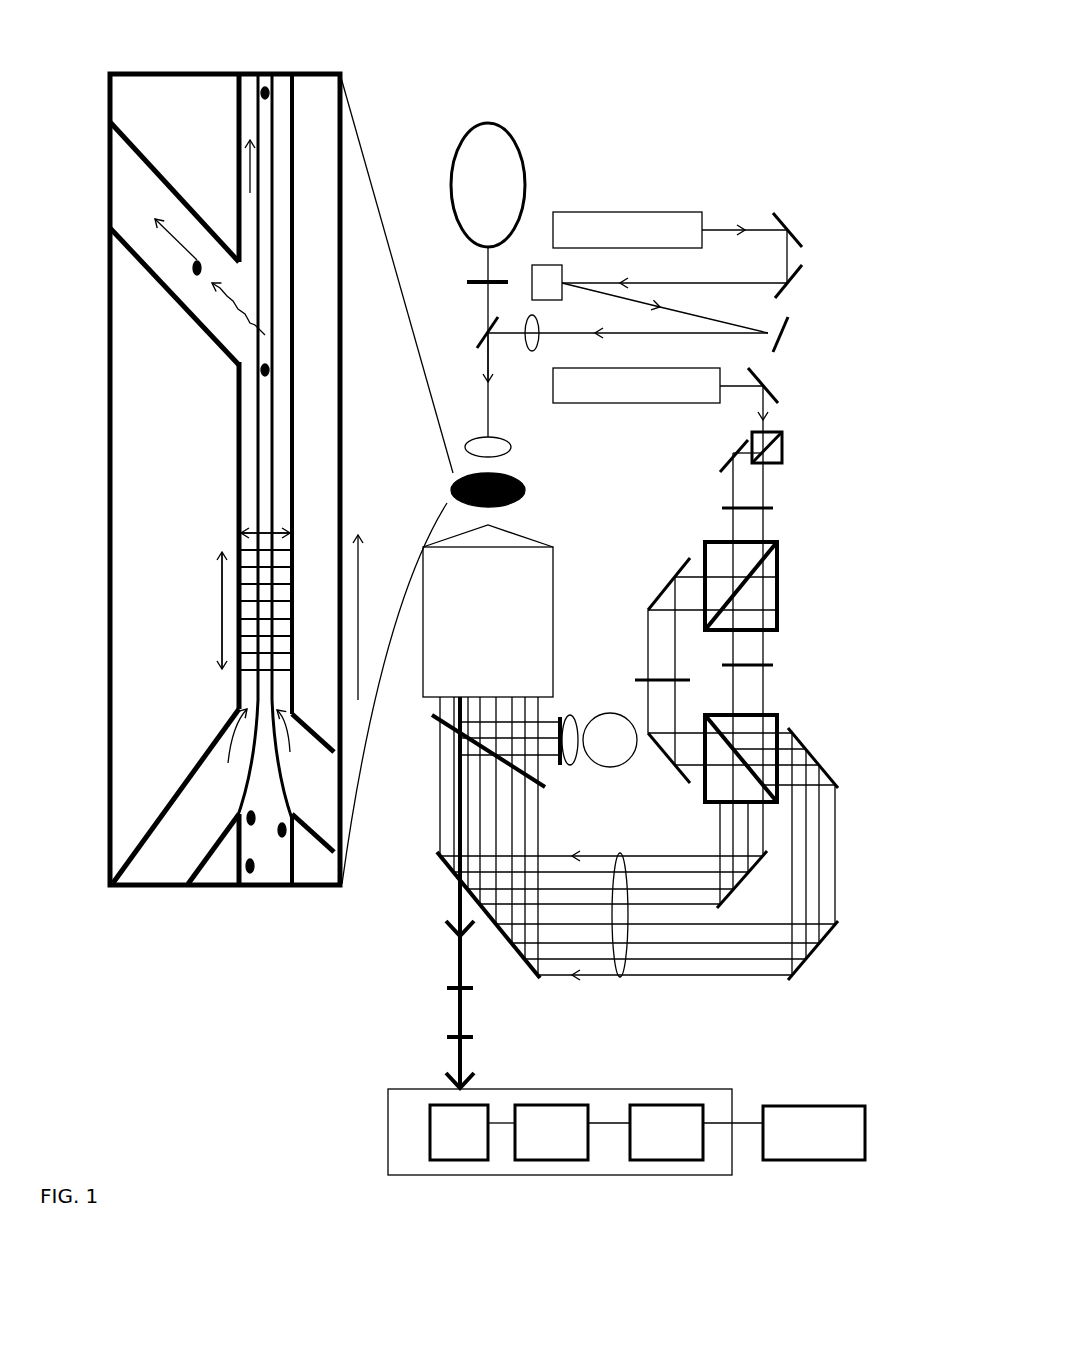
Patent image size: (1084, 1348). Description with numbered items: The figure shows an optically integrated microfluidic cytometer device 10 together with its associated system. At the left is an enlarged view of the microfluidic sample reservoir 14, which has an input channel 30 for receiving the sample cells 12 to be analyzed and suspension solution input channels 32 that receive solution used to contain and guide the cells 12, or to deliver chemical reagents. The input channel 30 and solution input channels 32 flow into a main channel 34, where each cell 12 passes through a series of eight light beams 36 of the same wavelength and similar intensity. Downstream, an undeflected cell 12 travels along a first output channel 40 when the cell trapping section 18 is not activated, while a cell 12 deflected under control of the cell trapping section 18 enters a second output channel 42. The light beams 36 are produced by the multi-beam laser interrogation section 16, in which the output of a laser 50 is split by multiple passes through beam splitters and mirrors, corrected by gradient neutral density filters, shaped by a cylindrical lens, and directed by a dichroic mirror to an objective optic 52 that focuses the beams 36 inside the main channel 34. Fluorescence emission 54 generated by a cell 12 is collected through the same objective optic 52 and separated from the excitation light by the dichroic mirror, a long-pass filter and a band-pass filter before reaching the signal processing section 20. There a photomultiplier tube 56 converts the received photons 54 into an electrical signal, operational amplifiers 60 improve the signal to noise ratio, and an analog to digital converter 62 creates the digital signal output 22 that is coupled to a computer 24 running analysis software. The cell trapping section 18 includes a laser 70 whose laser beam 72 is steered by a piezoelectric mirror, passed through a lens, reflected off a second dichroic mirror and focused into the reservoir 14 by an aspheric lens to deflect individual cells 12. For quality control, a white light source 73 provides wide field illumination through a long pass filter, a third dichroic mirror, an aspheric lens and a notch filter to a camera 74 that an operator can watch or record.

The optically integrated microfluidic cytometer device 10 is at (211, 1139).
The sample cell 12 is at (197, 262).
The microfluidic sample reservoir 14 is at (532, 490).
The multi-beam laser interrogation section 16 is at (845, 855).
The cell trapping section 18 is at (613, 180).
The signal processing section 20 is at (388, 1133).
The signal output 22 is at (742, 1123).
The computer 24 is at (835, 1160).
The input channel 30 is at (265, 900).
The suspension solution input channel 32 is at (317, 793).
The main channel 34 is at (232, 512).
The light beams 36 is at (283, 578).
The first output channel 40 is at (285, 88).
The second output channel 42 is at (130, 212).
The laser 50 is at (663, 407).
The objective optic 52 is at (525, 577).
The fluorescence emission 54 is at (458, 812).
The photomultiplier tube 56 is at (450, 1160).
The operational amplifier 60 is at (552, 1160).
The analog to digital converter 62 is at (670, 1160).
The trapping laser 70 is at (652, 210).
The laser beam 72 is at (723, 227).
The white light source 73 is at (450, 166).
The CCD camera 74 is at (610, 772).